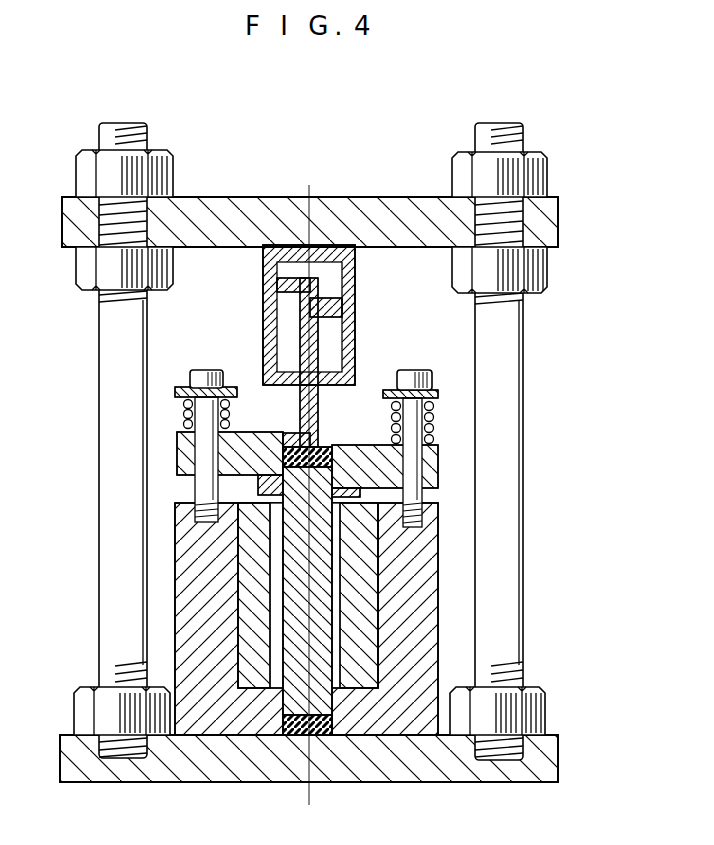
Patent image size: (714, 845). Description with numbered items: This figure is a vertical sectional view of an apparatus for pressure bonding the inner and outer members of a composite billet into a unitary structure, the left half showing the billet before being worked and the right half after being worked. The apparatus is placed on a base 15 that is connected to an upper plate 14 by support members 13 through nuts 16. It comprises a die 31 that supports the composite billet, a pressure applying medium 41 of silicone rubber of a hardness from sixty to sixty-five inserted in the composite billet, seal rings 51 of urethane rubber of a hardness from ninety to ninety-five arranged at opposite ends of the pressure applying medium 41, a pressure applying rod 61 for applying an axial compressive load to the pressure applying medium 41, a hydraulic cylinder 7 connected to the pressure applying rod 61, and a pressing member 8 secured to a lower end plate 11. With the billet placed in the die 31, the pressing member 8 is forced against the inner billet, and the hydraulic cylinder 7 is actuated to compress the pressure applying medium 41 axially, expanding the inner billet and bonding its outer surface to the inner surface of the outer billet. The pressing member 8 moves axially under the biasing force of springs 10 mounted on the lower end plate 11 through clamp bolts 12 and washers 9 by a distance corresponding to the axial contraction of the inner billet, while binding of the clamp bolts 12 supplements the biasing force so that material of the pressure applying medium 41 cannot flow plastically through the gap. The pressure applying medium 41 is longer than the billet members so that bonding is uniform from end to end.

The hydraulic cylinder 7 is at (264, 320).
The pressing member 8 is at (258, 489).
The washer 9 is at (183, 388).
The spring 10 is at (185, 420).
The lower end plate 11 is at (185, 456).
The clamp bolt 12 is at (425, 380).
The support member 13 is at (516, 400).
The plate 14 is at (561, 218).
The base 15 is at (553, 765).
The nut 16 is at (545, 172).
The die 31 is at (412, 633).
The pressure applying medium 41 is at (330, 585).
The seal ring 51 is at (313, 443).
The pressure applying rod 61 is at (290, 433).